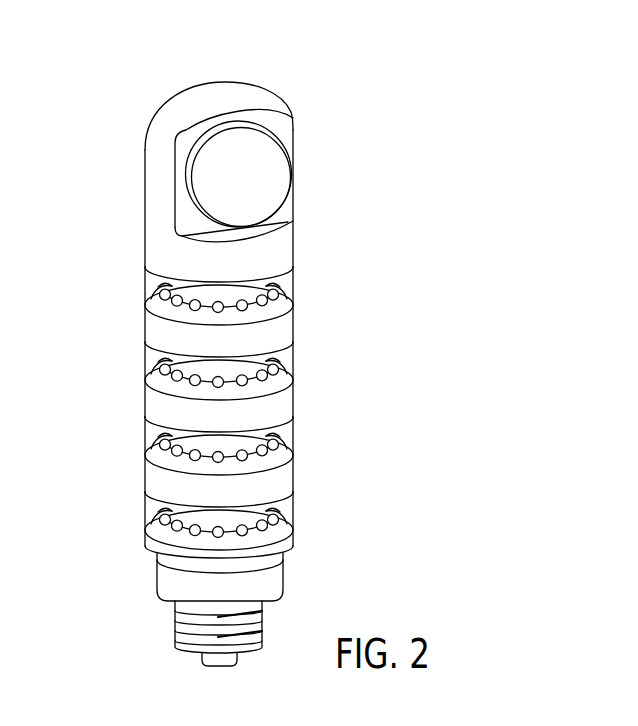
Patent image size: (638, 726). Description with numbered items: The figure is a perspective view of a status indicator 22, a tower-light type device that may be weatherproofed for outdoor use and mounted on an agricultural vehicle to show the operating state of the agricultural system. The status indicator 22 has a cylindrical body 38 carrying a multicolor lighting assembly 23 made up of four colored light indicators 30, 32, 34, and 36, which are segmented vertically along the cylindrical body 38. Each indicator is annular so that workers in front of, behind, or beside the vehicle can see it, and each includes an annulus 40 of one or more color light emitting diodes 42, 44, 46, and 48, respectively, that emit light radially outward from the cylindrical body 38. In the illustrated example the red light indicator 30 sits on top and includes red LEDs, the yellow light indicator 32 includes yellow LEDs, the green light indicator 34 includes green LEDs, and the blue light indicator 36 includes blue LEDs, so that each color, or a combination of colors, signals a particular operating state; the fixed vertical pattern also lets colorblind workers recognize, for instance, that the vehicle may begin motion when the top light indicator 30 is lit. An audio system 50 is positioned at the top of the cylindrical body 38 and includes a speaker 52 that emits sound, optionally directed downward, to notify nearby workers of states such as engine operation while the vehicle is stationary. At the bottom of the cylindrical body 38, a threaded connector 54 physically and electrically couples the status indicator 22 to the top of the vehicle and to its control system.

The status indicator 22 is at (340, 98).
The multicolor lighting assembly 23 is at (432, 400).
The red light indicator 30 is at (294, 272).
The yellow light indicator 32 is at (294, 347).
The green light indicator 34 is at (294, 424).
The blue light indicator 36 is at (294, 500).
The cylindrical body 38 is at (294, 240).
The annulus 40 is at (207, 292).
The red light emitting diodes 42 is at (265, 303).
The yellow light emitting diodes 44 is at (265, 378).
The green light emitting diodes 46 is at (265, 453).
The blue light emitting diodes 48 is at (265, 528).
The audio system 50 is at (173, 207).
The speaker 52 is at (205, 175).
The connector 54 is at (176, 625).